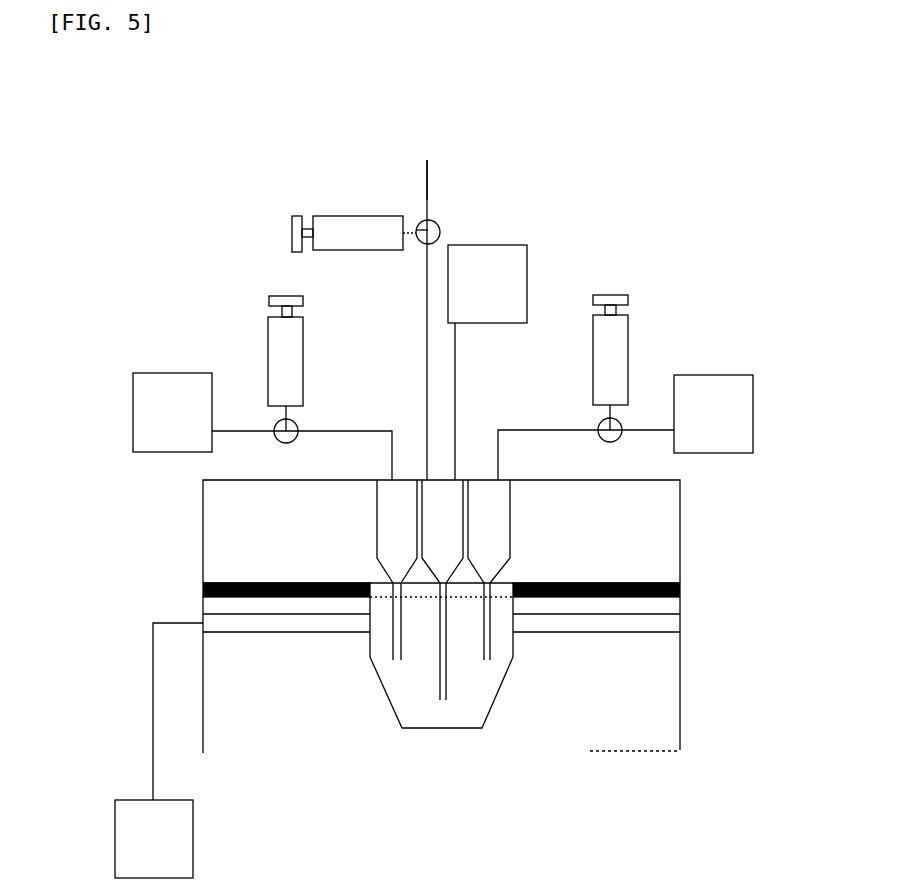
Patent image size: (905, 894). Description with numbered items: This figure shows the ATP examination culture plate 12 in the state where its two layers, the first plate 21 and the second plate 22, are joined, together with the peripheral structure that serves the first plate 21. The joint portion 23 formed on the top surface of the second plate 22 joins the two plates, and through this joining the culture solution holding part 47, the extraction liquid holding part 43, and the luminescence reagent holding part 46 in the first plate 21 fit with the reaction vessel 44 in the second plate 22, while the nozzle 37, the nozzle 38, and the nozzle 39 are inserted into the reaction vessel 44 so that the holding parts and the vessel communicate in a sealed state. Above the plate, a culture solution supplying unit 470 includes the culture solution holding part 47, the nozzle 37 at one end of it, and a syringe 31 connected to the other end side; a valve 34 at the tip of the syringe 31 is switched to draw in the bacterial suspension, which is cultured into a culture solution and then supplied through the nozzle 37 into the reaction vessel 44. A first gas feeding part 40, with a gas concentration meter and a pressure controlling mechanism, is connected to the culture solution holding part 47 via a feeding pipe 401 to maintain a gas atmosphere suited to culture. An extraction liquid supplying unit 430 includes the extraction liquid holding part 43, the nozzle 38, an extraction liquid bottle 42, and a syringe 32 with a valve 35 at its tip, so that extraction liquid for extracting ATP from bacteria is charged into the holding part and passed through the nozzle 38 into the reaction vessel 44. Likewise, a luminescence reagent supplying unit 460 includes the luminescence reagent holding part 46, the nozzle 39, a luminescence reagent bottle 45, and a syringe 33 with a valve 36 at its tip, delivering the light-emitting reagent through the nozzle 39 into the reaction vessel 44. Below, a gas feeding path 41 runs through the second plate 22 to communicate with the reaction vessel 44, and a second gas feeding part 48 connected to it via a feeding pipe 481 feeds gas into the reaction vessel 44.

The ATP examination culture plate 12 is at (475, 496).
The first plate 21 is at (467, 371).
The second plate 22 is at (449, 706).
The joint portion 23 is at (213, 583).
The syringe 31 is at (337, 216).
The syringe 32 is at (303, 372).
The syringe 33 is at (623, 295).
The valve 34 is at (418, 240).
The valve 35 is at (298, 422).
The valve 36 is at (622, 422).
The nozzle 37 is at (447, 690).
The nozzle 38 is at (392, 648).
The nozzle 39 is at (490, 645).
The first gas feeding part 40 is at (477, 245).
The feeding pipe 401 is at (455, 335).
The gas feeding path 41 is at (203, 622).
The extraction liquid bottle 42 is at (157, 373).
The extraction liquid holding part 43 is at (377, 540).
The reaction vessel 44 is at (457, 730).
The luminescence reagent bottle 45 is at (695, 377).
The luminescence reagent holding part 46 is at (510, 540).
The culture solution holding part 47 is at (435, 480).
The second gas feeding part 48 is at (188, 862).
The extraction liquid supplying unit 430 is at (230, 302).
The luminescence reagent supplying unit 460 is at (662, 293).
The culture solution supplying unit 470 is at (435, 148).
The feeding pipe 481 is at (155, 762).